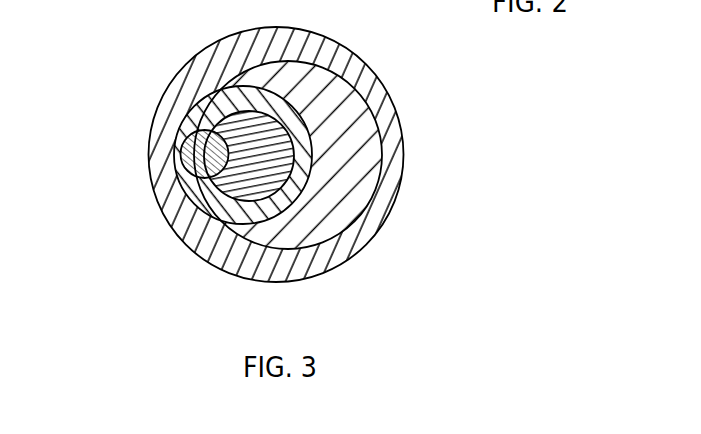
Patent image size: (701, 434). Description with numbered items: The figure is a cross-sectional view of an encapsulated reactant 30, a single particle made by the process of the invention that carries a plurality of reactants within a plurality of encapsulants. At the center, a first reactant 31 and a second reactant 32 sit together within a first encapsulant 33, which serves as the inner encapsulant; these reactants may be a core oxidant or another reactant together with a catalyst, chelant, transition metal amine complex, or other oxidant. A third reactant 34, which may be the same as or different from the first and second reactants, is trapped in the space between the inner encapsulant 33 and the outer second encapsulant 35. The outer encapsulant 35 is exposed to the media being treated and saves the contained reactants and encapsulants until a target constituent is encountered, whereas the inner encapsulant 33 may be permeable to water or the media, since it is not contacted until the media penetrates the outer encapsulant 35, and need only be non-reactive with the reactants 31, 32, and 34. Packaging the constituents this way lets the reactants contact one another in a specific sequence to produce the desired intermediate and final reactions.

The encapsulated reactant 30 is at (450, 130).
The first reactant 31 is at (182, 170).
The second reactant 32 is at (237, 127).
The first encapsulant 33 is at (192, 185).
The third reactant 34 is at (337, 210).
The second encapsulant 35 is at (177, 208).